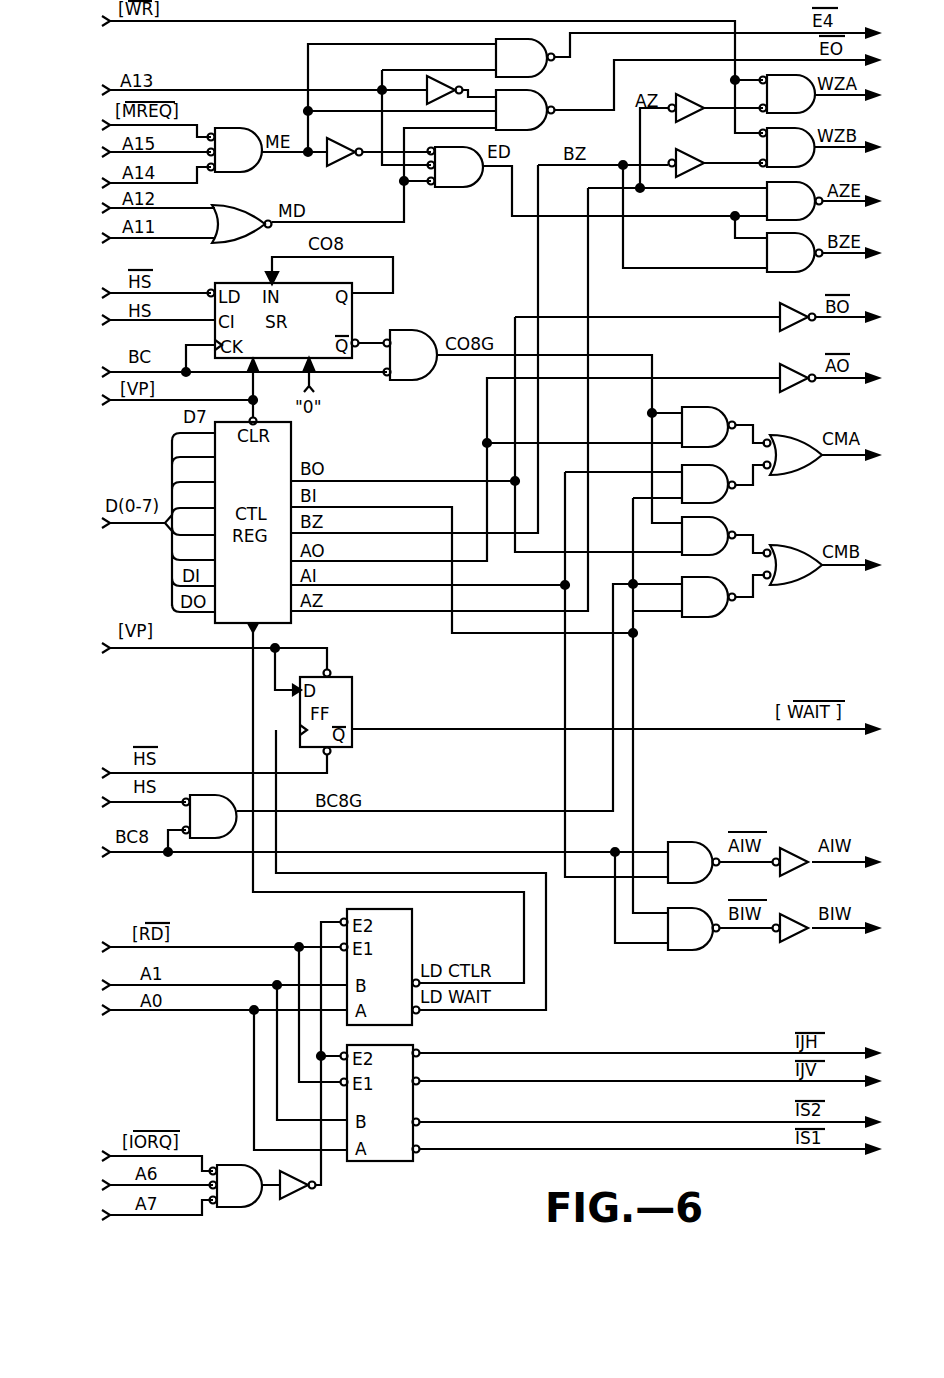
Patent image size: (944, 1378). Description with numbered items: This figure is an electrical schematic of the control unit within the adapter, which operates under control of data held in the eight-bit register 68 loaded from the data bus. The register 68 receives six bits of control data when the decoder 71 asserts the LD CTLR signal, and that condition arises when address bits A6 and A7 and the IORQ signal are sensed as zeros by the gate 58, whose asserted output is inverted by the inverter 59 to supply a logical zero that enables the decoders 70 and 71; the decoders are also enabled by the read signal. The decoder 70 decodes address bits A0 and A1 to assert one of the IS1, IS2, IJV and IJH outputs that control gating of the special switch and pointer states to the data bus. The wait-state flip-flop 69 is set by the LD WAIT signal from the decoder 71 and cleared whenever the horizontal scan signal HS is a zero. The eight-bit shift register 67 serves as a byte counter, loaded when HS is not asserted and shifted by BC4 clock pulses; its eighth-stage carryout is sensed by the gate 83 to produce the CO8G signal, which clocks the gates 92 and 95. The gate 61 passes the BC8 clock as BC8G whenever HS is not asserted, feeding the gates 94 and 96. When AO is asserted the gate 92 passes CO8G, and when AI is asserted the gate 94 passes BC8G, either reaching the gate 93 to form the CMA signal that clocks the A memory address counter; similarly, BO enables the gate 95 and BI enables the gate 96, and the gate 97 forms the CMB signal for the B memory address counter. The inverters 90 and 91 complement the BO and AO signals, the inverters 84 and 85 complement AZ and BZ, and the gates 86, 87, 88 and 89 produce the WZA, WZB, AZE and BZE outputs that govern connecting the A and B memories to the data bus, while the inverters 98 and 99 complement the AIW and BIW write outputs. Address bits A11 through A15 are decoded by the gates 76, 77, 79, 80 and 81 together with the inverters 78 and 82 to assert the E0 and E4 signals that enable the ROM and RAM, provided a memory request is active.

The gate 58 is at (247, 1200).
The inverter 59 is at (296, 1195).
The gate 61 is at (215, 808).
The 8-bit shift register 67 is at (347, 326).
The 8-bit register 68 is at (280, 455).
The wait-state flip-flop 69 is at (348, 705).
The decoder 70 is at (402, 1120).
The decoder 71 is at (402, 940).
The gate 76 is at (243, 142).
The gate 77 is at (248, 213).
The inverter 78 is at (338, 150).
The gate 79 is at (542, 76).
The gate 80 is at (540, 120).
The gate 81 is at (462, 178).
The inverter 82 is at (452, 87).
The gate 83 is at (420, 332).
The inverter 84 is at (683, 100).
The inverter 85 is at (690, 160).
The gate 86 is at (805, 100).
The gate 87 is at (806, 152).
The gate 88 is at (811, 205).
The gate 89 is at (809, 258).
The inverter 90 is at (785, 305).
The inverter 91 is at (785, 365).
The gate 92 is at (715, 412).
The gate 93 is at (785, 445).
The gate 94 is at (710, 470).
The gate 95 is at (712, 528).
The gate 96 is at (718, 608).
The gate 97 is at (790, 553).
The inverter 98 is at (795, 850).
The inverter 99 is at (796, 945).